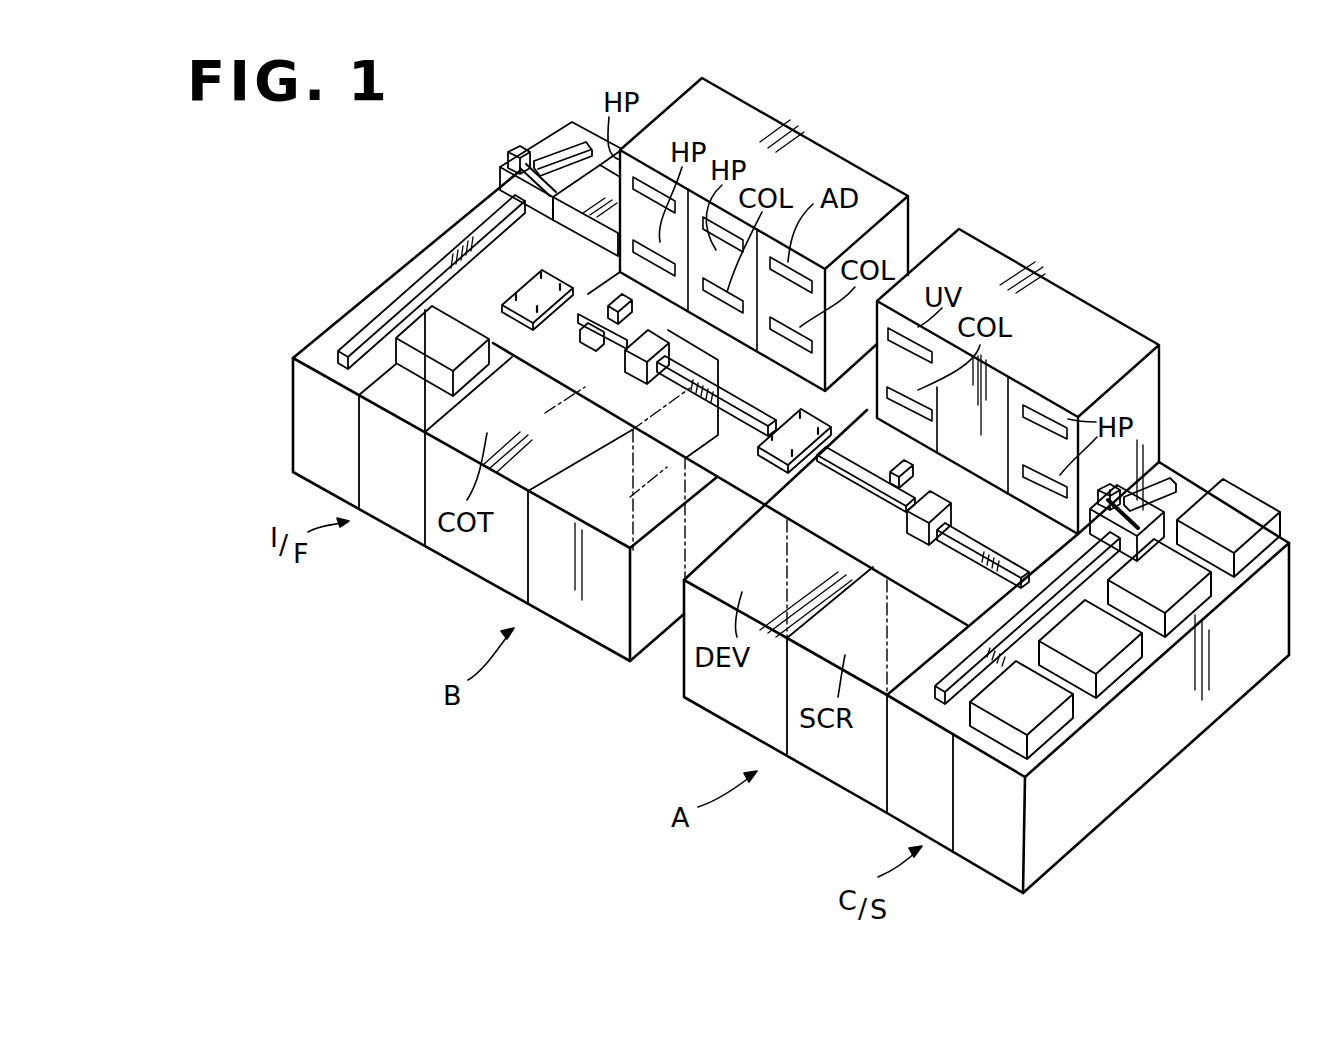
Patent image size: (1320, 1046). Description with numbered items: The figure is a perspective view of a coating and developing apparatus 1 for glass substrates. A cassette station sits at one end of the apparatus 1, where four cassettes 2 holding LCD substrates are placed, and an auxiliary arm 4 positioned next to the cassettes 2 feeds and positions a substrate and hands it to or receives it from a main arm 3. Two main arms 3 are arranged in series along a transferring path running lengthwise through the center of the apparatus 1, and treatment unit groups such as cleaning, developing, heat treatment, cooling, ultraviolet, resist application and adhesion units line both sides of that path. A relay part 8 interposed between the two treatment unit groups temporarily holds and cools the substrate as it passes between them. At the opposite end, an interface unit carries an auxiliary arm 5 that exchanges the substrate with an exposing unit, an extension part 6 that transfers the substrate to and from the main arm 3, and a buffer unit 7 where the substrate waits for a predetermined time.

The coating and developing apparatus 1 is at (1223, 369).
The cassette 2 is at (1243, 513).
The main arm 3 is at (640, 348).
The auxiliary arm 4 is at (1138, 492).
The auxiliary arm 5 is at (510, 147).
The extension part 6 is at (523, 292).
The buffer unit 7 is at (415, 340).
The relay part 8 is at (783, 432).